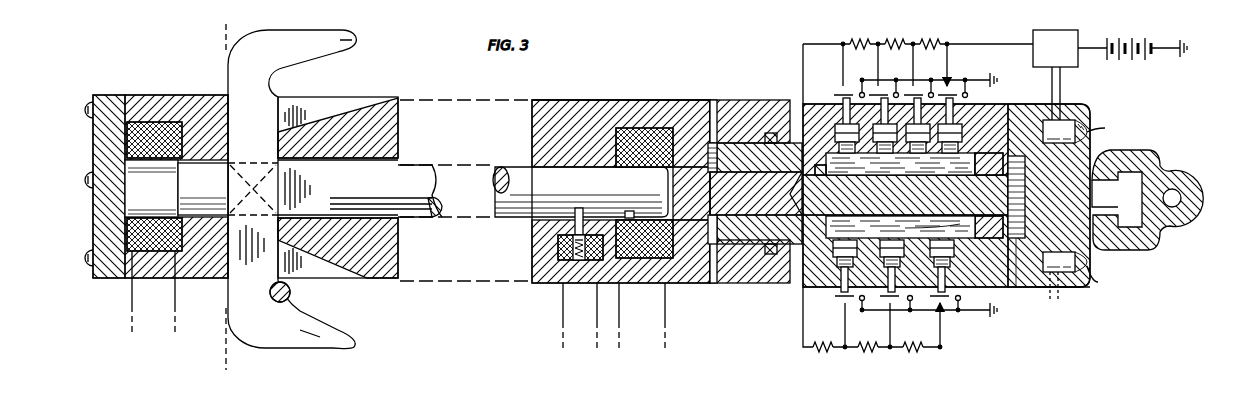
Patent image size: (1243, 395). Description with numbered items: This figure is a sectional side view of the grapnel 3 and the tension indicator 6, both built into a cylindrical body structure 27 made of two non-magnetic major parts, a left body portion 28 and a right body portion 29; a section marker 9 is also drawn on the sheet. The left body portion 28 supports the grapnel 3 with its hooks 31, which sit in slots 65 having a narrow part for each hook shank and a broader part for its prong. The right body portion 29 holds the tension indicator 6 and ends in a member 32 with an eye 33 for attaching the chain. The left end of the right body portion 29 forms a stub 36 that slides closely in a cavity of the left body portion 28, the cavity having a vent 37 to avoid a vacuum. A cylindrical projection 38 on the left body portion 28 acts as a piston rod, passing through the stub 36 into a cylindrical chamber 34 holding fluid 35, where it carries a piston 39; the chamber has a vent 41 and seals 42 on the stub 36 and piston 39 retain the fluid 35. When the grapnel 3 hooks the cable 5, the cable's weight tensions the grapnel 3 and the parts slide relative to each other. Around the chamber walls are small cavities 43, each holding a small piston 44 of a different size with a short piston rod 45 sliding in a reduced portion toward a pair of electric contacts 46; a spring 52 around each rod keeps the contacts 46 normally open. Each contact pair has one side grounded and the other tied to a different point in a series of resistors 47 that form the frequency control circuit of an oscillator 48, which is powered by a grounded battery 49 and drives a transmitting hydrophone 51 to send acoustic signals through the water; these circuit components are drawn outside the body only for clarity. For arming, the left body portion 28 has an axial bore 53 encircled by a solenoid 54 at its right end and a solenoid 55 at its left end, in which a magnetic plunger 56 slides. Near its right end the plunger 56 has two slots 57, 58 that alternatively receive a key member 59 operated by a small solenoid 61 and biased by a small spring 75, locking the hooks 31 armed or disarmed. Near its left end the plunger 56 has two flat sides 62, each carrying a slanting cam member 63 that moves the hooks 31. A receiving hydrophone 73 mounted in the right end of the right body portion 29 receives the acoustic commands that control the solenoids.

The grapnel 3 is at (289, 372).
The cable 5 is at (291, 296).
The tension indicator 6 is at (975, 66).
The section line 9 is at (224, 40).
The cylindrical body structure 27 is at (660, 63).
The left body portion 28 is at (586, 108).
The right body portion 29 is at (1012, 287).
The hooks 31 is at (352, 40).
The member 32 is at (1158, 194).
The eye 33 is at (1180, 192).
The cylindrical chamber 34 is at (1025, 176).
The fluid 35 is at (972, 144).
The stub 36 is at (738, 143).
The vent 37 is at (714, 102).
The cylindrical projection 38 is at (745, 200).
The piston 39 is at (1025, 222).
The vent 41 is at (1045, 287).
The seals 42 is at (820, 165).
The small cavities 43 is at (930, 230).
The small piston 44 is at (955, 260).
The short piston rod 45 is at (962, 99).
The electric contacts 46 is at (838, 80).
The resistors 47 is at (876, 48).
The oscillator 48 is at (1033, 57).
The battery 49 is at (1135, 58).
The transmitting hydrophone 51 is at (1062, 125).
The spring 52 is at (961, 298).
The axial bore 53 is at (140, 200).
The solenoid 54 is at (645, 128).
The solenoid 55 is at (158, 122).
The plunger 56 is at (415, 165).
The slot 57 is at (578, 208).
The slot 58 is at (629, 211).
The key member 59 is at (573, 232).
The small solenoid 61 is at (560, 250).
The flat sides 62 is at (312, 193).
The cam member 63 is at (244, 160).
The slots 65 is at (312, 110).
The receiving hydrophone 73 is at (1067, 278).
The small spring 75 is at (568, 270).